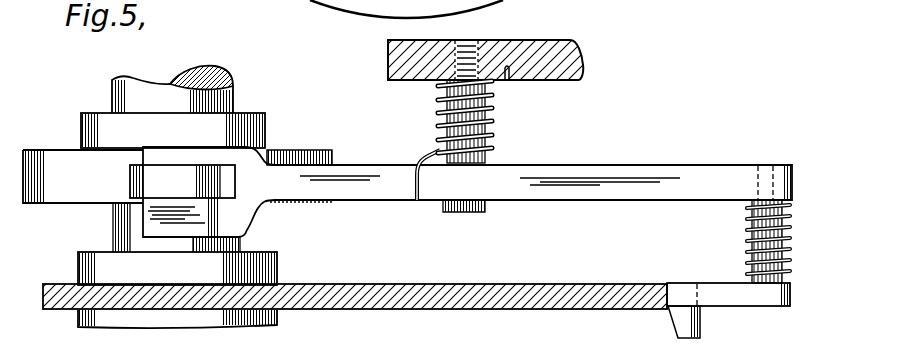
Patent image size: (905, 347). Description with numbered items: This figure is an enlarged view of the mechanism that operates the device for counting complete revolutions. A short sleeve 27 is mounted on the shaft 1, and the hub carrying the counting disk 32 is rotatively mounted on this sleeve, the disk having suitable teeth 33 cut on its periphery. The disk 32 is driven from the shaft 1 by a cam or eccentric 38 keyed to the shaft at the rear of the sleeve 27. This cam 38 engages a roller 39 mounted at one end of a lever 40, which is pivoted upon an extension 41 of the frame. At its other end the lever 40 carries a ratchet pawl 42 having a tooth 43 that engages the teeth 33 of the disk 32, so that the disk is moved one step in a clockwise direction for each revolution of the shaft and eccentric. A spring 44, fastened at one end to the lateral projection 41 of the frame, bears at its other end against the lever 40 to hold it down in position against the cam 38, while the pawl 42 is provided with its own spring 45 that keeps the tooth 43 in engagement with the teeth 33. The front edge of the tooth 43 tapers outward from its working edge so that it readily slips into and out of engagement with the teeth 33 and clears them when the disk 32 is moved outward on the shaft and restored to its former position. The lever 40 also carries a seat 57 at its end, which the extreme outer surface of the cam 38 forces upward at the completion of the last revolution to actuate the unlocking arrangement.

The shaft 1 is at (212, 76).
The cam or eccentric 38 is at (63, 160).
The roller 39 is at (182, 181).
The seat 57 is at (145, 215).
The sleeve 27 is at (265, 266).
The disk 32 is at (505, 306).
The lever 40 is at (542, 190).
The extension of the frame 41 is at (575, 40).
The spring 44 is at (495, 125).
The spring 45 is at (783, 228).
The ratchet pawl 42 is at (772, 293).
The tooth 43 is at (700, 319).
The teeth 33 is at (665, 283).